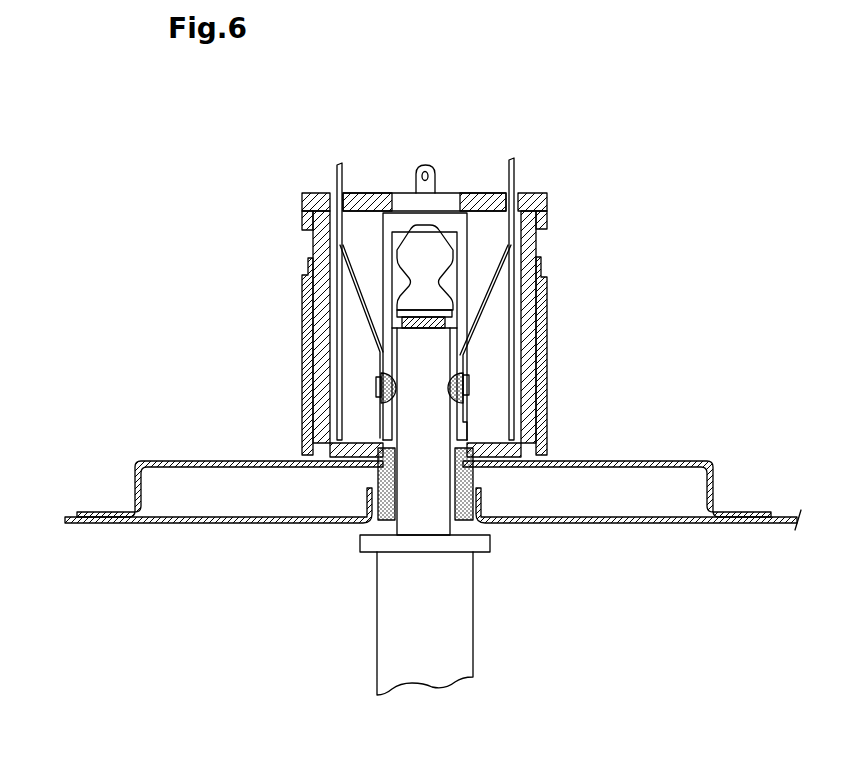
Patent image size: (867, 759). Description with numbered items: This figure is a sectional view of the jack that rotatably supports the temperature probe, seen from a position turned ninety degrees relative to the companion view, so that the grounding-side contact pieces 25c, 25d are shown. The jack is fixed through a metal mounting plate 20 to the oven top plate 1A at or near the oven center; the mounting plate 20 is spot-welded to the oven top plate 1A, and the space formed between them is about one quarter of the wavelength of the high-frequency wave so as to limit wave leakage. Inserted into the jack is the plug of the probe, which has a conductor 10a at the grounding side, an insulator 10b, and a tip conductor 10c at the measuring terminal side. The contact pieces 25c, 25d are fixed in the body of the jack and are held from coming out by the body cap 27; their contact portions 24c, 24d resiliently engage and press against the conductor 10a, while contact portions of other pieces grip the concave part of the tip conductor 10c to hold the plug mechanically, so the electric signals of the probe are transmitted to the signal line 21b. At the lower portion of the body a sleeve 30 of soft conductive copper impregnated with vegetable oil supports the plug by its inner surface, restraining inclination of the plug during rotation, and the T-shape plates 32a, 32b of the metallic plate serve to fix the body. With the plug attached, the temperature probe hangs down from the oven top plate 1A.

The oven top plate 1A is at (642, 524).
The conductor 10a is at (418, 480).
The insulator 10b is at (443, 320).
The tip conductor 10c is at (430, 247).
The mounting plate 20 is at (715, 462).
The signal line 21b is at (338, 163).
The contact portion 24c is at (378, 388).
The contact portion 24d is at (457, 388).
The contact piece 25c is at (365, 318).
The contact piece 25d is at (477, 342).
The body cap 27 is at (547, 193).
The sleeve 30 is at (467, 498).
The T-shape plate 32a is at (311, 262).
The T-shape plate 32b is at (546, 258).